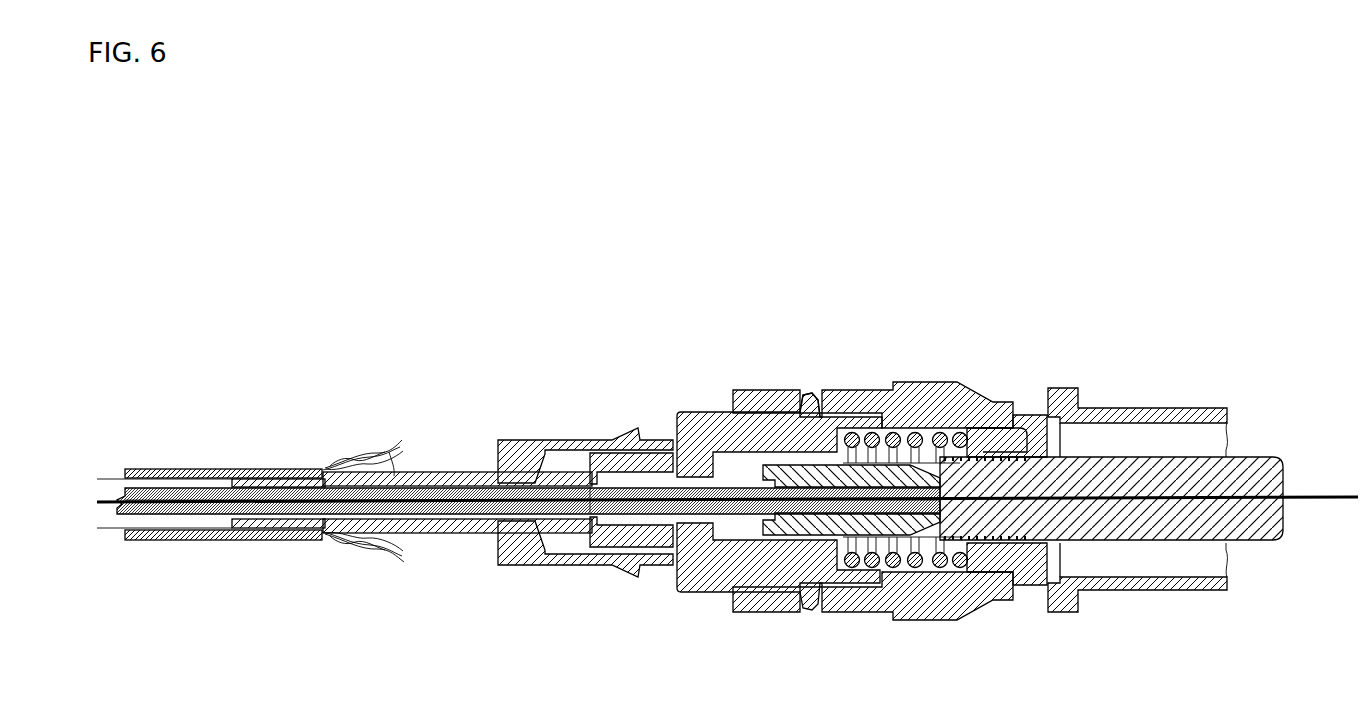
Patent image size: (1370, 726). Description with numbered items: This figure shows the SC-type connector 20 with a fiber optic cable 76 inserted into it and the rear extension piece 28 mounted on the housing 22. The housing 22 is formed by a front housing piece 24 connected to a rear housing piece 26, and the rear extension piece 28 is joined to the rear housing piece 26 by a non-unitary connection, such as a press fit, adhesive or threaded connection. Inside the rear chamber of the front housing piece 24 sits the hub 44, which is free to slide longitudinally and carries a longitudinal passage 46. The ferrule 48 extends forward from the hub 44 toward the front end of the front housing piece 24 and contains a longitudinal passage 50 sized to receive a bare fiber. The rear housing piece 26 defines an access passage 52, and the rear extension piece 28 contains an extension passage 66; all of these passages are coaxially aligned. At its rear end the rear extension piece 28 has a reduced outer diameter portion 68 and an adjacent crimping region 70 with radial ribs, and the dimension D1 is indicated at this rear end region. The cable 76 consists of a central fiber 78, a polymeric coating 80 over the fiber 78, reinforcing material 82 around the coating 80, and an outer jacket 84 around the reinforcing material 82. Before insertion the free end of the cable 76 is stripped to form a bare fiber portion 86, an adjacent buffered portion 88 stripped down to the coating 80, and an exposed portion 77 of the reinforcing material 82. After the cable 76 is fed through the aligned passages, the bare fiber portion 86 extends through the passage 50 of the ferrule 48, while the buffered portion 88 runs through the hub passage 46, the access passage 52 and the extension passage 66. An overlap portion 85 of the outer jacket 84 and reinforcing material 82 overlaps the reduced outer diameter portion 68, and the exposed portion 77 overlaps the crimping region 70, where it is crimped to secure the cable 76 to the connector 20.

The connector 20 is at (697, 278).
The housing 22 is at (756, 388).
The front housing piece 24 is at (932, 385).
The rear housing piece 26 is at (700, 593).
The rear extension piece 28 is at (515, 565).
The hub 44 is at (834, 538).
The longitudinal passage 46 is at (806, 522).
The ferrule 48 is at (1195, 540).
The longitudinal passage 50 is at (1187, 490).
The access passage 52 is at (630, 530).
The extension passage 66 is at (448, 518).
The reduced outer diameter portion 68 is at (247, 529).
The crimping region 70 is at (393, 470).
The fiber optic cable 76 is at (137, 541).
The exposed portion of reinforcing material 77 is at (357, 550).
The central fiber 78 is at (1303, 495).
The polymeric coating 80 is at (567, 487).
The reinforcing material 82 is at (328, 467).
The outer jacket 84 is at (160, 468).
The overlap portion 85 is at (258, 468).
The bare fiber portion 86 is at (1317, 497).
The buffered portion 88 is at (580, 532).
The tube diameter D1 is at (472, 557).